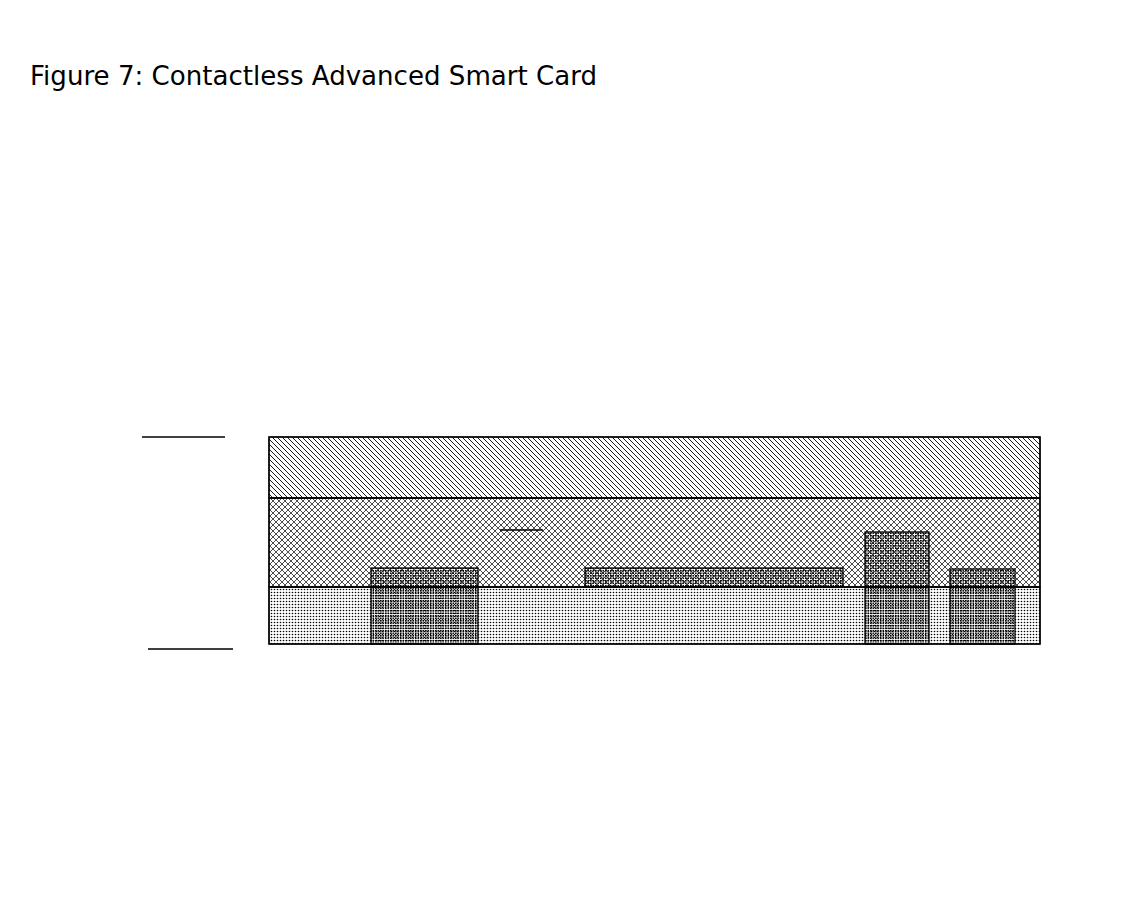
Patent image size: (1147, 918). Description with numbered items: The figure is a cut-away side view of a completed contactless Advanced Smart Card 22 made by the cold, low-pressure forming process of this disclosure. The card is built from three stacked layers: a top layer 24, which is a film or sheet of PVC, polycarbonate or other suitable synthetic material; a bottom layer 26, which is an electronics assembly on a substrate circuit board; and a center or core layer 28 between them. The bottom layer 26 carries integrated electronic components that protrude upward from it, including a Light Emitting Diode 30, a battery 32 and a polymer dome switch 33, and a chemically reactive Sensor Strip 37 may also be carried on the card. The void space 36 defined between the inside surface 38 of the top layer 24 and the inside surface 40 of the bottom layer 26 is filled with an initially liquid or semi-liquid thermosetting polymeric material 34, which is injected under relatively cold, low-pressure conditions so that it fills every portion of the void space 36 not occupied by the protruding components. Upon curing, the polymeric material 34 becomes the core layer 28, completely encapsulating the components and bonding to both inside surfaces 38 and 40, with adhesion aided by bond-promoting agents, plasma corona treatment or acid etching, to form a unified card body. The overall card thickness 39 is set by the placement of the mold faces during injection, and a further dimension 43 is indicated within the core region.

The Advanced Smart Card 22 is at (356, 281).
The top layer 24 is at (700, 478).
The bottom layer 26 is at (529, 622).
The center or core layer 28 is at (1000, 551).
The Light Emitting Diode 30 is at (927, 566).
The battery 32 is at (778, 566).
The polymer dome switch 33 is at (972, 608).
The thermosetting polymeric material 34 is at (725, 535).
The void space 36 is at (286, 494).
The Sensor Strip 37 is at (414, 606).
The inside surface of the top layer 38 is at (869, 500).
The thickness 39 is at (186, 646).
The inside surface of the bottom layer 40 is at (330, 586).
The layer thickness 43 is at (522, 565).